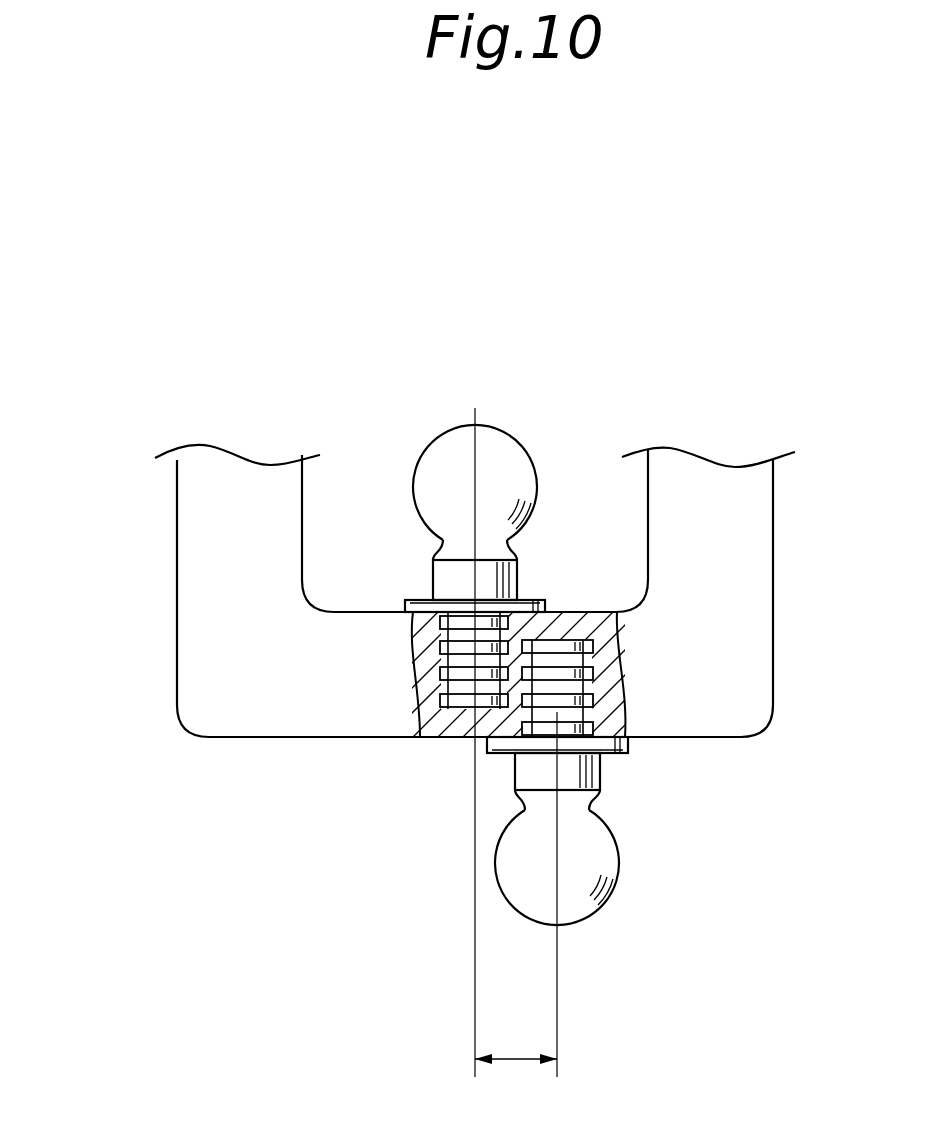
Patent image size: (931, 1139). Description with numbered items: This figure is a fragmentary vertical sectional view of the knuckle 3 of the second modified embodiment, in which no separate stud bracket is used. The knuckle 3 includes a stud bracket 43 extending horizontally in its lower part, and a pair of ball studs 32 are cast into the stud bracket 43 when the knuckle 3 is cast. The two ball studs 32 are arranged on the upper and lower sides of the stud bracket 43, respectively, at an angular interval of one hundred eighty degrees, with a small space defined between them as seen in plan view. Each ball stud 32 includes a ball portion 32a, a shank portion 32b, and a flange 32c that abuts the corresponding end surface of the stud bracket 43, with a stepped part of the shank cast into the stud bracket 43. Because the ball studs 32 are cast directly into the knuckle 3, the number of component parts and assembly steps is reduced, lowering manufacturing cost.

The knuckle 3 is at (168, 543).
The stud bracket 43 is at (680, 718).
The ball stud 32 is at (524, 728).
The ball portion 32a is at (512, 441).
The shank portion 32b is at (516, 578).
The flange 32c is at (406, 600).